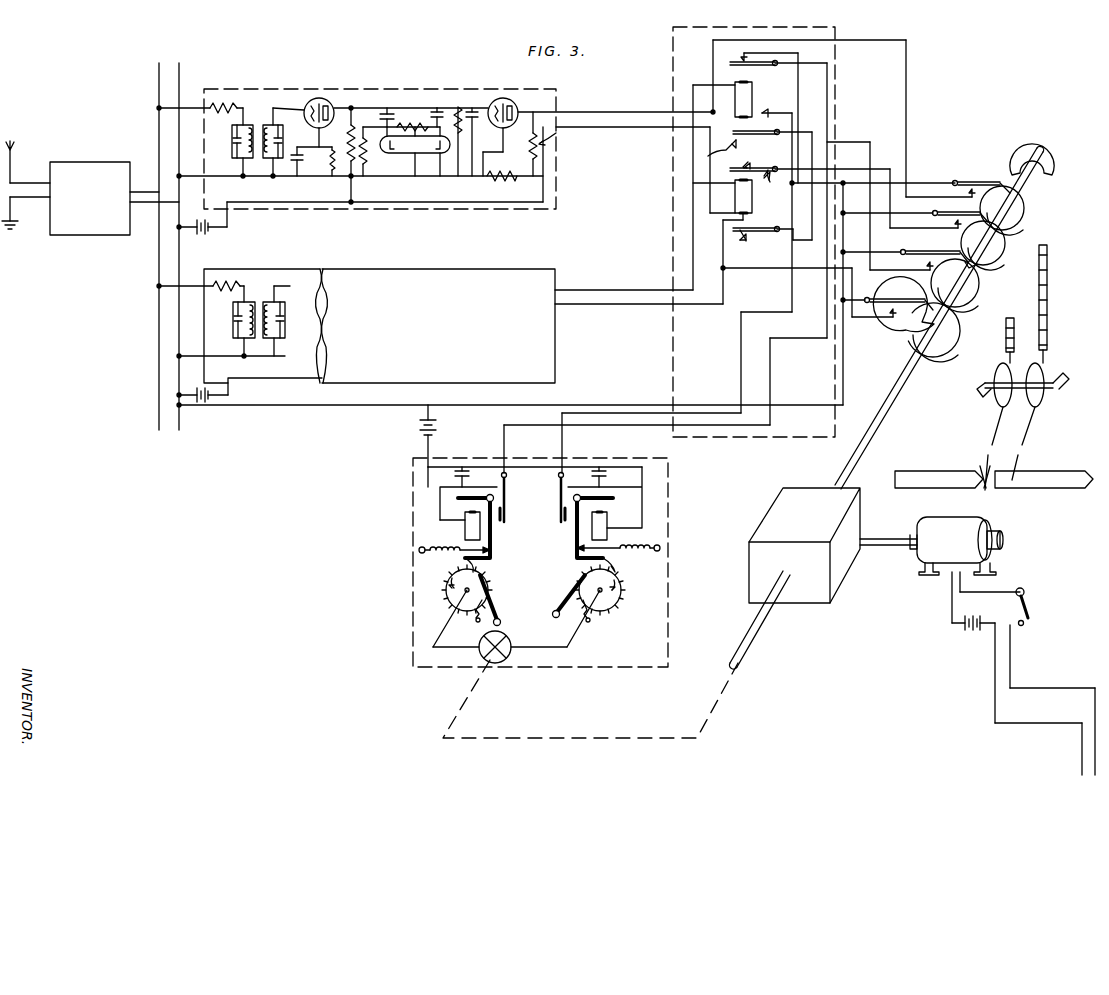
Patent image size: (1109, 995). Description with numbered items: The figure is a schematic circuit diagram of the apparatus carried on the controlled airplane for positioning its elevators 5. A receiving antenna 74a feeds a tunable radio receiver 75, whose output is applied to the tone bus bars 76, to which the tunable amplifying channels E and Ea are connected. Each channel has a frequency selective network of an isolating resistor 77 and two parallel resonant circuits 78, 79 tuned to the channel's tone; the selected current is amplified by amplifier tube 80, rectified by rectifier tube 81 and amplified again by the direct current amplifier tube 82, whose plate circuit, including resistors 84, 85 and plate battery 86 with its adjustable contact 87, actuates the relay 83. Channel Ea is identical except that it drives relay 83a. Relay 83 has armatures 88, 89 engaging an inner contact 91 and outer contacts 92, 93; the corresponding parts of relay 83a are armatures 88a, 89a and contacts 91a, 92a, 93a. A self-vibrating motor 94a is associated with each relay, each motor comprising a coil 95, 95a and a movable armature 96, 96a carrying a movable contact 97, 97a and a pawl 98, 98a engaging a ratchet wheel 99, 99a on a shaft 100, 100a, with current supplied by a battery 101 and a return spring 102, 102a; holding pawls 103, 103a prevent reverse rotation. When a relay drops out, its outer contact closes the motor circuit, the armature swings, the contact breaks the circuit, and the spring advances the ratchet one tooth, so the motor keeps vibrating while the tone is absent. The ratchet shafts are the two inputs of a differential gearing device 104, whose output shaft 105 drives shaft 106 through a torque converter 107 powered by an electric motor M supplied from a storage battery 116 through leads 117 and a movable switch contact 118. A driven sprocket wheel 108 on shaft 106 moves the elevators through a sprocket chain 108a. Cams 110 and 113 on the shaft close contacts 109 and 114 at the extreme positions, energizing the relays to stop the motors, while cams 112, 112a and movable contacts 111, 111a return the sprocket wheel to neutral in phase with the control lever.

The receiving antenna 74a is at (14, 143).
The tunable radio receiver 75 is at (118, 162).
The tone bus bars 76 is at (160, 317).
The isolating resistor 77 is at (224, 105).
The parallel resonant circuit 78 is at (236, 126).
The parallel resonant circuit 79 is at (268, 122).
The amplifier tube 80 is at (310, 98).
The rectifier tube 81 is at (424, 168).
The direct current amplifier tube 82 is at (516, 94).
The relay 83 is at (754, 98).
The relay 83a is at (736, 200).
The resistor 84 is at (526, 154).
The resistor 85 is at (510, 177).
The plate battery 86 is at (204, 232).
The adjustable contact 87 is at (554, 143).
The armature 88 is at (729, 66).
The armature 88a is at (733, 171).
The armature 89 is at (728, 132).
The armature 89a is at (737, 231).
The inner contact 91 is at (768, 112).
The inner contact 91a is at (764, 180).
The outer contact 92 is at (744, 50).
The outer contact 92a is at (744, 242).
The outer contact 93 is at (712, 151).
The outer contact 93a is at (748, 161).
The self-vibrating motor 94a is at (422, 524).
The coil 95 is at (605, 530).
The coil 95a is at (464, 530).
The movable armature 96 is at (618, 512).
The movable armature 96a is at (460, 500).
The movable contact 97 is at (562, 500).
The movable contact 97a is at (506, 512).
The pawl 98 is at (620, 562).
The pawl 98a is at (482, 567).
The ratchet wheel 99 is at (619, 587).
The ratchet wheel 99a is at (436, 586).
The shaft 100 is at (578, 634).
The shaft 100a is at (444, 630).
The battery 101 is at (420, 432).
The spring 102 is at (656, 543).
The spring 102a is at (418, 552).
The holding pawl 103 is at (576, 588).
The holding pawl 103a is at (496, 595).
The differential gearing device 104 is at (504, 636).
The output shaft 105 is at (760, 642).
The driven shaft 106 is at (905, 393).
The torque converter 107 is at (846, 564).
The driven sprocket wheel 108 is at (1050, 172).
The sprocket chain 108a is at (1052, 170).
The contact 109 is at (914, 298).
The cam 110 is at (902, 342).
The movable contact 111 is at (958, 224).
The movable contact 111a is at (921, 265).
The cam 112 is at (999, 265).
The cam 112a is at (978, 308).
The cam 113 is at (1021, 222).
The contact 114 is at (972, 183).
The storage battery 116 is at (970, 627).
The leads 117 is at (1002, 669).
The movable switch contact 118 is at (1033, 607).
The elevator 5 is at (944, 467).
The tunable amplifying channel E is at (386, 88).
The tunable amplifying channel Ea is at (383, 268).
The electric motor M is at (931, 546).